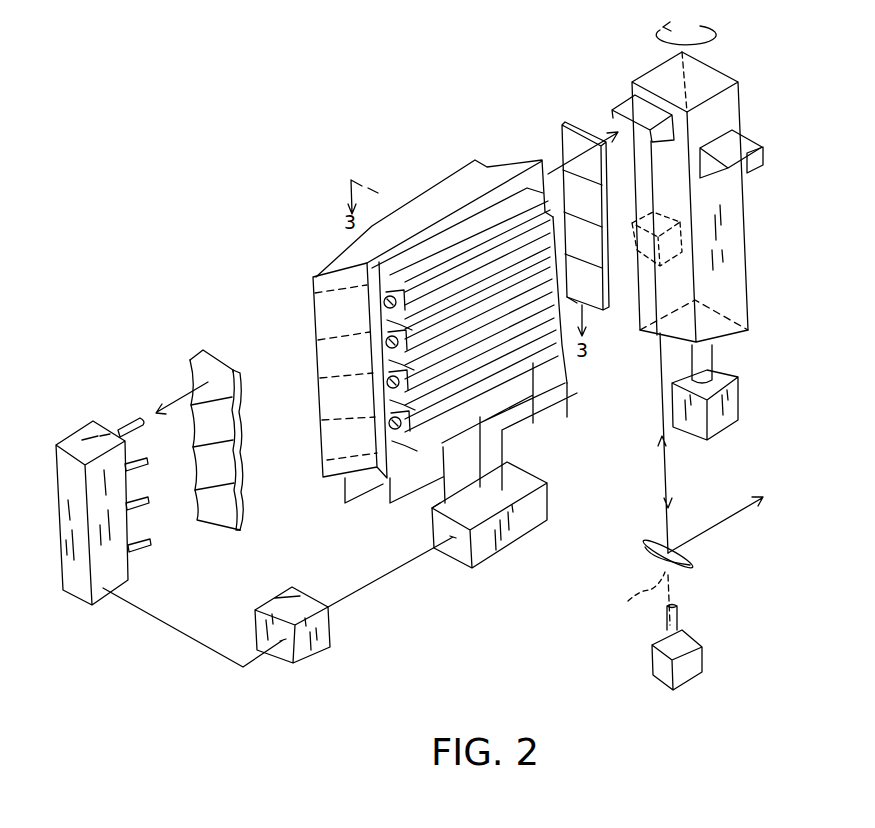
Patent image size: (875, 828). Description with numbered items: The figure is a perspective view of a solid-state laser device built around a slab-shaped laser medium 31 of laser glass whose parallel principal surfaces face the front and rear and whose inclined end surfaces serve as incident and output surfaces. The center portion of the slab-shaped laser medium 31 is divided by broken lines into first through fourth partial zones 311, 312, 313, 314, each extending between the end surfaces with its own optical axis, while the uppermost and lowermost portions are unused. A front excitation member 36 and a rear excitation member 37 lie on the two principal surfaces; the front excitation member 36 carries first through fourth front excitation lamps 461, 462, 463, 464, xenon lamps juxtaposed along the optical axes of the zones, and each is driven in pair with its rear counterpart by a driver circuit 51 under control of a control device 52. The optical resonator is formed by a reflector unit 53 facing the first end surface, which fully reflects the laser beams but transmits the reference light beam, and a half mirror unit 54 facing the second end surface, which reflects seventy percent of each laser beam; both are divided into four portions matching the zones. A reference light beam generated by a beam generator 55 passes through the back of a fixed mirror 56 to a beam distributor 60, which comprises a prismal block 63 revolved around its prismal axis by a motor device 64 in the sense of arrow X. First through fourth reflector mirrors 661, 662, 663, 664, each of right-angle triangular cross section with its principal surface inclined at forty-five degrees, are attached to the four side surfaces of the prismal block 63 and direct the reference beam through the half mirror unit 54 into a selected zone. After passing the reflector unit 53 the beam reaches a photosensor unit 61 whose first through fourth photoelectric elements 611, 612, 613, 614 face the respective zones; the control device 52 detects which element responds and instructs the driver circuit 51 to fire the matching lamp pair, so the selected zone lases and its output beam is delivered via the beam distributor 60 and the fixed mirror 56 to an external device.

The slab-shaped laser medium 31 is at (406, 302).
The rear excitation member 37 is at (456, 159).
The front excitation member 36 is at (449, 391).
The first partial zone 311 is at (342, 297).
The second partial zone 312 is at (342, 346).
The third partial zone 313 is at (342, 397).
The fourth partial zone 314 is at (340, 450).
The first front excitation lamp 461 is at (386, 297).
The second front excitation lamp 462 is at (387, 341).
The third front excitation lamp 463 is at (388, 382).
The fourth front excitation lamp 464 is at (390, 423).
The driver circuit 51 is at (504, 550).
The control device 52 is at (314, 650).
The reflector unit 53 is at (220, 522).
The half mirror unit 54 is at (600, 300).
The beam generator 55 is at (700, 655).
The fixed mirror 56 is at (700, 565).
The beam distributor 60 is at (710, 287).
The photosensor unit 61 is at (78, 437).
The first photoelectric element 611 is at (126, 426).
The second photoelectric element 612 is at (144, 468).
The third photoelectric element 613 is at (149, 504).
The fourth photoelectric element 614 is at (151, 545).
The prismal block 63 is at (730, 254).
The motor device 64 is at (730, 401).
The first reflector mirror 661 is at (628, 100).
The second reflector mirror 662 is at (740, 142).
The third reflector mirror 663 is at (768, 160).
The fourth reflector mirror 664 is at (640, 248).